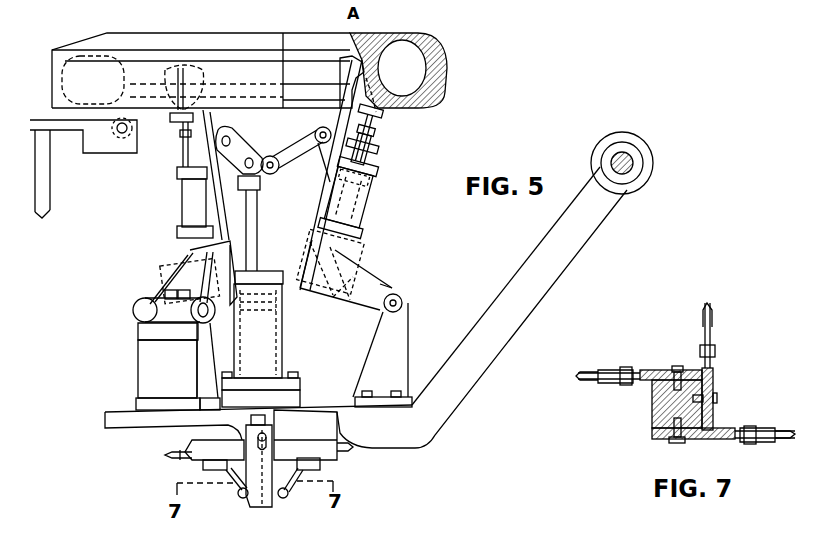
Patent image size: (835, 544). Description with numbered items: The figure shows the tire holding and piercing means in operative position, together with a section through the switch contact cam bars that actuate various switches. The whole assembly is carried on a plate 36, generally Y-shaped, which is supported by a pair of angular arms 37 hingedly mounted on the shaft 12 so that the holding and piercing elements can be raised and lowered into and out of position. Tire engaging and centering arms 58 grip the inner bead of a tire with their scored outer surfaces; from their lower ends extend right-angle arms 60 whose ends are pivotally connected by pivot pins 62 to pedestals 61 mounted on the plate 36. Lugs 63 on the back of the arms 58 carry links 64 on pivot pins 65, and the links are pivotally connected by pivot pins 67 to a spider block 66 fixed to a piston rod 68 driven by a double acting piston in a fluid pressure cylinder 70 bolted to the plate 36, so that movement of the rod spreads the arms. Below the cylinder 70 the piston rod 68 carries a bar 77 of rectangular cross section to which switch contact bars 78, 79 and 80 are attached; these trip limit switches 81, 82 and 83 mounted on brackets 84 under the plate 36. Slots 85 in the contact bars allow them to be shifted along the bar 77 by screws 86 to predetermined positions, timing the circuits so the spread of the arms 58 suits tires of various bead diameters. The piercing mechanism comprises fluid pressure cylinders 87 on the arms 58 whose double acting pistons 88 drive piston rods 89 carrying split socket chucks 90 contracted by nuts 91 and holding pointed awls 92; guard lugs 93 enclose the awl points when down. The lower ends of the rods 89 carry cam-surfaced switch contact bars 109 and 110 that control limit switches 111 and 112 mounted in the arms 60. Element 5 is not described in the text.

In FIG. 5, the support frame 5 is at (55, 214).
In FIG. 5, the shaft 12 is at (634, 168).
In FIG. 5, the plate 36 is at (323, 403).
In FIG. 5, the angular arms 37 is at (587, 237).
In FIG. 5, the arms 58 is at (348, 57).
In FIG. 5, the arms 60 is at (386, 284).
In FIG. 5, the pedestals 61 is at (150, 360).
In FIG. 5, the pivot pins 62 is at (403, 306).
In FIG. 5, the lugs 63 is at (332, 124).
In FIG. 5, the links 64 is at (302, 147).
In FIG. 5, the pivot pins 65 is at (322, 150).
In FIG. 5, the spider block 66 is at (261, 140).
In FIG. 5, the pivot pins 67 is at (275, 169).
In FIG. 5, the piston rod 68 is at (262, 245).
In FIG. 5, the fluid pressure cylinder 70 is at (282, 347).
In FIG. 7, the bar 77 is at (663, 405).
In FIG. 5, the switch contact bar 78 is at (284, 497).
In FIG. 7, the switch contact bar 78 is at (710, 440).
In FIG. 5, the switch contact bar 79 is at (249, 502).
In FIG. 7, the switch contact bar 79 is at (652, 368).
In FIG. 7, the switch contact bar 80 is at (714, 373).
In FIG. 5, the limit switch 81 is at (327, 456).
In FIG. 7, the limit switch 81 is at (752, 442).
In FIG. 5, the limit switch 82 is at (196, 456).
In FIG. 7, the limit switch 82 is at (612, 368).
In FIG. 7, the limit switch 83 is at (713, 340).
In FIG. 5, the brackets 84 is at (192, 441).
In FIG. 5, the slots 85 is at (267, 437).
In FIG. 5, the screws 86 is at (258, 503).
In FIG. 7, the screws 86 is at (678, 366).
In FIG. 5, the fluid pressure cylinders 87 is at (196, 199).
In FIG. 5, the double acting pistons 88 is at (372, 185).
In FIG. 5, the piston rods 89 is at (182, 150).
In FIG. 5, the chucks 90 is at (368, 128).
In FIG. 5, the nuts 91 is at (368, 128).
In FIG. 5, the awls 92 is at (170, 98).
In FIG. 5, the lugs 93 is at (178, 120).
In FIG. 5, the switch contact bar 109 is at (197, 246).
In FIG. 5, the switch contact bar 110 is at (187, 255).
In FIG. 5, the limit switch 111 is at (173, 275).
In FIG. 5, the limit switch 112 is at (203, 297).